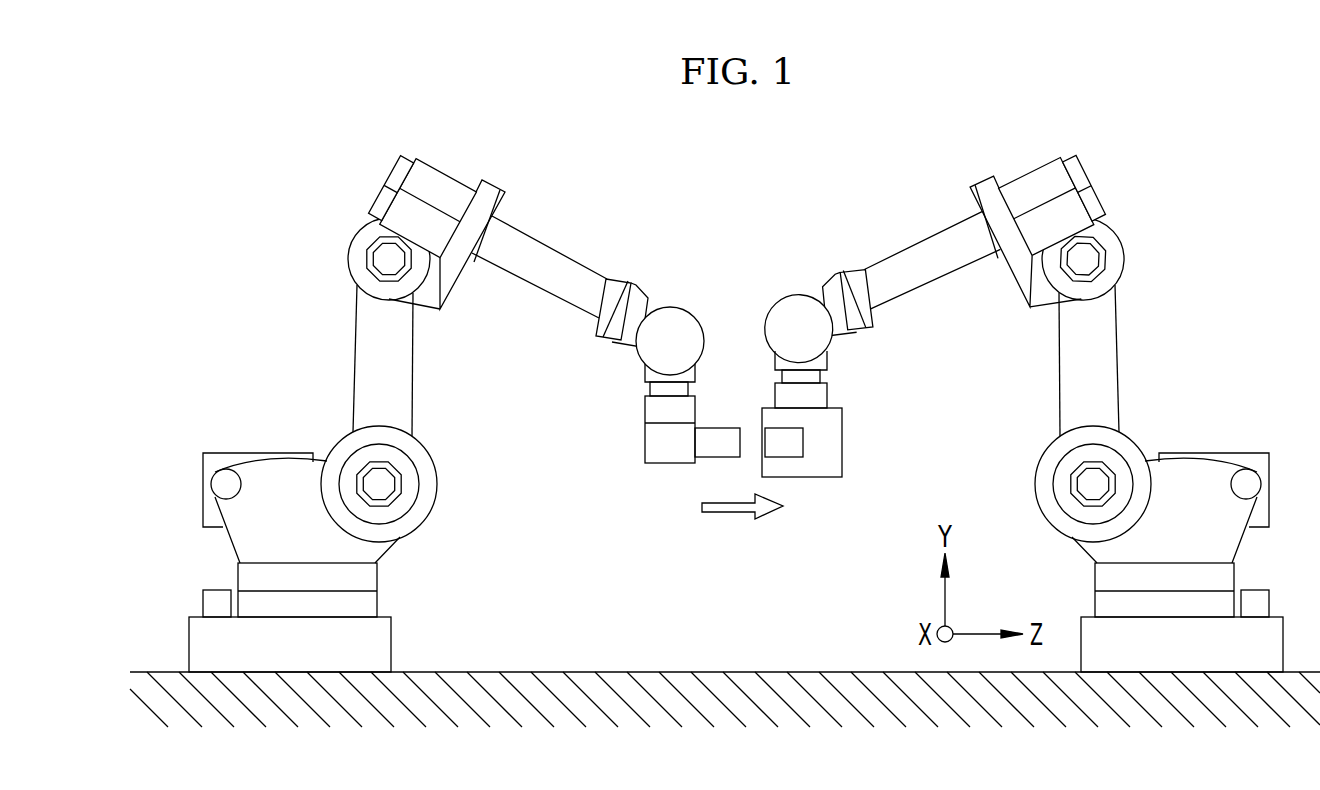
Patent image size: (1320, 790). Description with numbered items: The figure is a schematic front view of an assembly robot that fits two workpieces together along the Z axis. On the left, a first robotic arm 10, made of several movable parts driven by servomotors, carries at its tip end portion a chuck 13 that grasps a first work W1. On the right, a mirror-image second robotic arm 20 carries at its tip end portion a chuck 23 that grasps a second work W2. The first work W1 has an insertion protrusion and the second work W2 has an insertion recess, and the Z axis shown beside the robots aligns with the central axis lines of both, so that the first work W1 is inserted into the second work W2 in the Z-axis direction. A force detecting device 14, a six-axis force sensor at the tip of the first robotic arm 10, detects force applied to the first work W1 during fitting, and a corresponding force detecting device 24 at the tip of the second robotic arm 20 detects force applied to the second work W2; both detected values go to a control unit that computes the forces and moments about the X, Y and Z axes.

The first robotic arm 10 is at (320, 272).
The second robotic arm 20 is at (1166, 277).
The chuck 13 is at (645, 414).
The force detecting device 14 is at (648, 386).
The chuck 23 is at (828, 395).
The force detecting device 24 is at (827, 370).
The first work W1 is at (660, 464).
The second work W2 is at (822, 478).